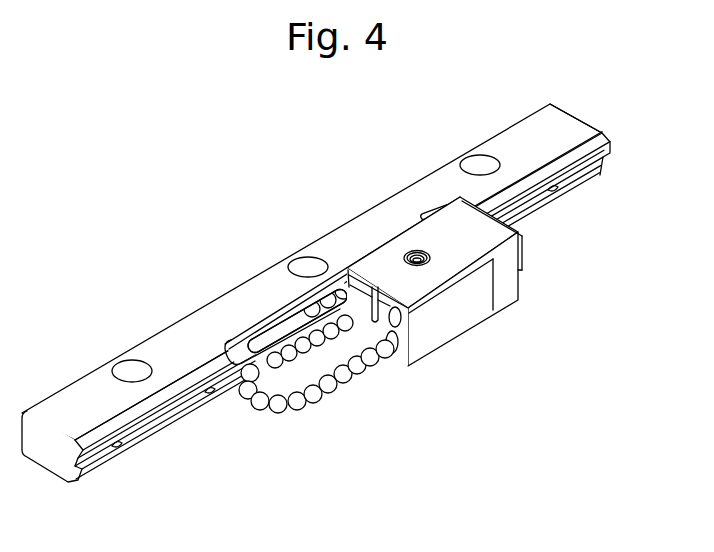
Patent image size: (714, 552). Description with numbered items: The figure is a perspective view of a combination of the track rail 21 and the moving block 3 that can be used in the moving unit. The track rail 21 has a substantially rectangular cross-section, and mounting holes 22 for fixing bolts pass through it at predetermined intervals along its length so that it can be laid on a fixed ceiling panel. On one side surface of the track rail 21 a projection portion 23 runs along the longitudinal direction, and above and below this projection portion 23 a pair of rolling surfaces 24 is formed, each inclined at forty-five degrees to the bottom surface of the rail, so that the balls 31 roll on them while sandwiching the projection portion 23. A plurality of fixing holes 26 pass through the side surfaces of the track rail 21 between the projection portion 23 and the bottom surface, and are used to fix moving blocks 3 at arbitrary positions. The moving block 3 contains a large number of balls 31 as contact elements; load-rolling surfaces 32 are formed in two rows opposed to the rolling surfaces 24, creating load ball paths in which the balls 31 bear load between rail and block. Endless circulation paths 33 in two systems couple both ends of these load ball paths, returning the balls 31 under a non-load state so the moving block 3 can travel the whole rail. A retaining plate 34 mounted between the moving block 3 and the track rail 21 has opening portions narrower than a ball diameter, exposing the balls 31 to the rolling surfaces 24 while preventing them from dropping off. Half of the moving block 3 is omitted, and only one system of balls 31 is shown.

The moving block 3 is at (490, 330).
The track rail 21 is at (194, 305).
The mounting holes 22 is at (136, 362).
The projection portion 23 is at (138, 426).
The rolling surfaces 24 is at (92, 442).
The fixing holes 26 is at (122, 450).
The balls 31 is at (316, 317).
The load-rolling surfaces 32 is at (337, 277).
The endless circulation paths 33 is at (401, 330).
The retaining plate 34 is at (239, 345).